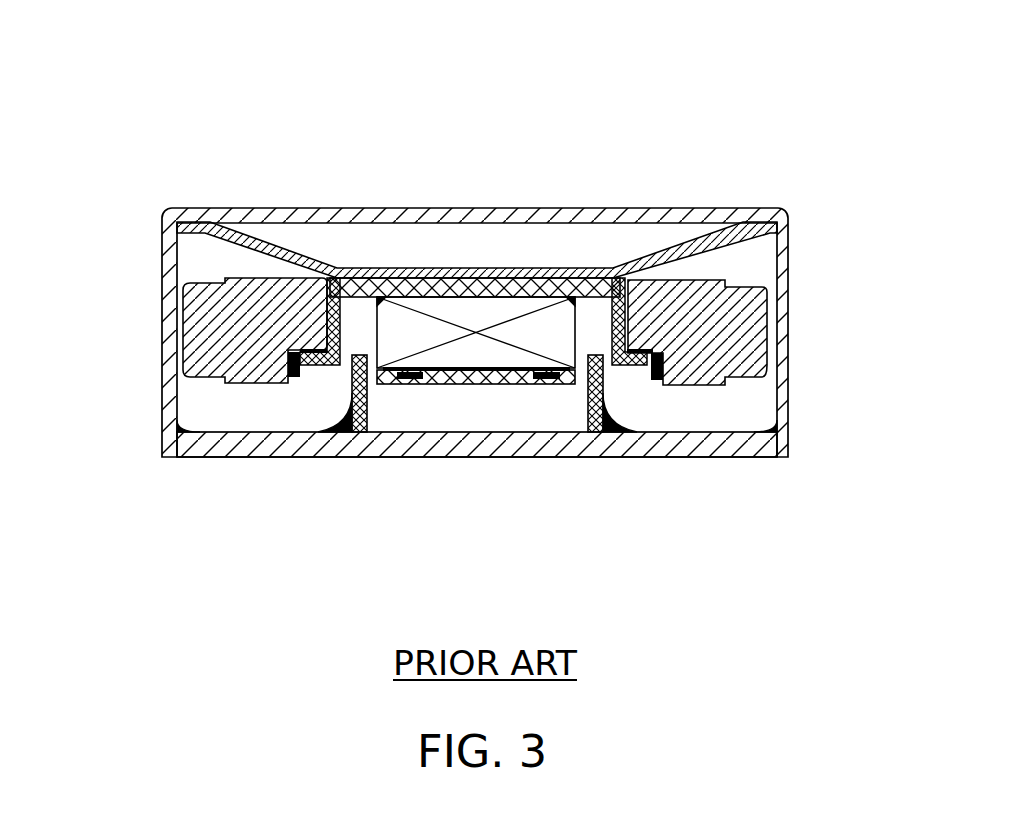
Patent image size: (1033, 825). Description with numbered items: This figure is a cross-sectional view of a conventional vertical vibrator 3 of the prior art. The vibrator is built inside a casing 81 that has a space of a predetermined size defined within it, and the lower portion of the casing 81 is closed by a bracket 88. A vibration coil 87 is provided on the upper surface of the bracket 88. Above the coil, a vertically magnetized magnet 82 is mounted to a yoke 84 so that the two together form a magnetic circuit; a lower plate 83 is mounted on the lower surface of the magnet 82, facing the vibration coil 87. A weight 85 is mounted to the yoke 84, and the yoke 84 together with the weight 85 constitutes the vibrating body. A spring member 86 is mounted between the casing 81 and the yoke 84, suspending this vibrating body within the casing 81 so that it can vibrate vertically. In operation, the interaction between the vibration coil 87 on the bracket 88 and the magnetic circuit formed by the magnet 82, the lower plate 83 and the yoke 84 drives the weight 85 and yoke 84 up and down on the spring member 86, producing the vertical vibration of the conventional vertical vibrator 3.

The conventional vertical vibrator 3 is at (724, 146).
The casing 81 is at (163, 258).
The magnet 82 is at (486, 312).
The lower plate 83 is at (497, 382).
The yoke 84 is at (453, 290).
The weight 85 is at (203, 333).
The spring member 86 is at (277, 242).
The vibration coil 87 is at (367, 392).
The bracket 88 is at (727, 452).